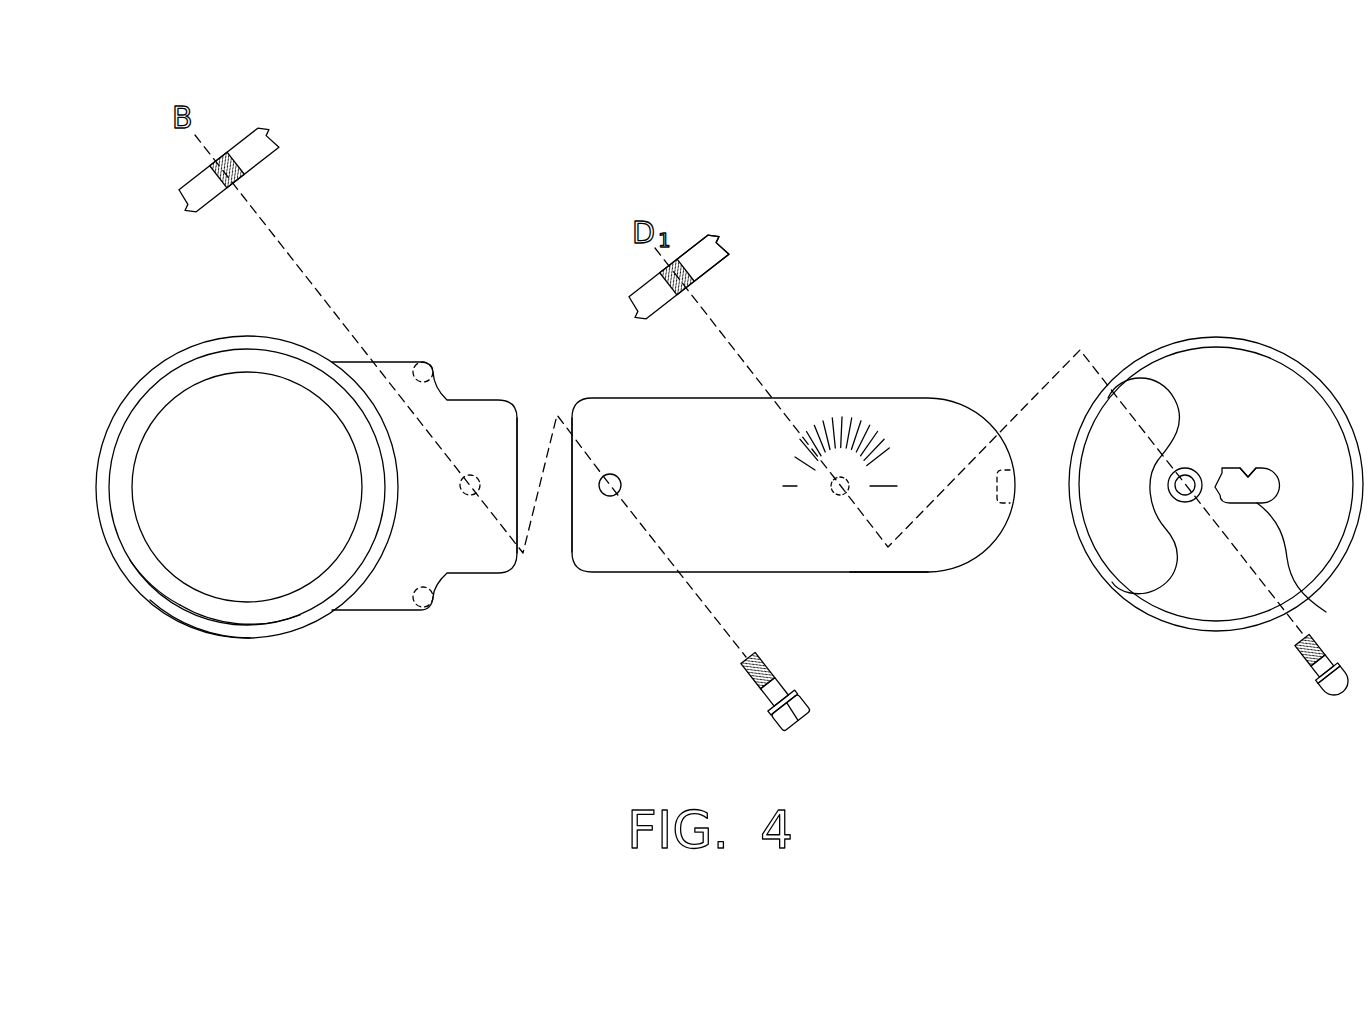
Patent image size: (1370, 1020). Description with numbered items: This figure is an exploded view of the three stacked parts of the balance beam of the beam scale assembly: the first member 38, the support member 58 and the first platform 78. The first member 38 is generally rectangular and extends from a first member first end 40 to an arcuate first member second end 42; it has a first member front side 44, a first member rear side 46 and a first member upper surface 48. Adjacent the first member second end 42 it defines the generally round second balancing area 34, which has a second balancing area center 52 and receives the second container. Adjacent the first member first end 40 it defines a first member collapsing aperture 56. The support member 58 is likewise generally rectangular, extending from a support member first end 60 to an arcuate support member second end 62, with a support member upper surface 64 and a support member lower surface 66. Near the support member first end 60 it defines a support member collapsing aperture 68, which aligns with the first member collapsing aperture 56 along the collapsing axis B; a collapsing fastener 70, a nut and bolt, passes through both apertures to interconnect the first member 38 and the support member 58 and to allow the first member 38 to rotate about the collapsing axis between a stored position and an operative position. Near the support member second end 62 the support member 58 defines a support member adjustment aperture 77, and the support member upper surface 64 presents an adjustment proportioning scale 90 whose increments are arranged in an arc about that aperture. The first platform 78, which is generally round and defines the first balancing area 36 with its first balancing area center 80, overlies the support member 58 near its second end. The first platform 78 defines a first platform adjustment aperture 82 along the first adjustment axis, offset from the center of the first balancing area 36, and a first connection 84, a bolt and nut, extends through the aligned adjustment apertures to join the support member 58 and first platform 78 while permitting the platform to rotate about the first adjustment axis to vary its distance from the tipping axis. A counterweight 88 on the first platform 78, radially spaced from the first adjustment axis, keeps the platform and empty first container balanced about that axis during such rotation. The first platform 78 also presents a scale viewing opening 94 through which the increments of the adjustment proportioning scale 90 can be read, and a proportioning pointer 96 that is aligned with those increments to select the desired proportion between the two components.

The second balancing area 34 is at (198, 623).
The first balancing area 36 is at (1176, 620).
The first member 38 is at (483, 398).
The first member first end 40 is at (516, 432).
The first member second end 42 is at (97, 500).
The first member front side 44 is at (248, 637).
The first member rear side 46 is at (251, 337).
The first member upper surface 48 is at (173, 603).
The second balancing area center 52 is at (247, 487).
The first member collapsing aperture 56 is at (470, 496).
The support member 58 is at (635, 572).
The support member first end 60 is at (570, 545).
The support member second end 62 is at (1016, 487).
The support member upper surface 64 is at (883, 572).
The support member lower surface 66 is at (698, 246).
The support member collapsing aperture 68 is at (610, 475).
The collapsing fastener 70 is at (237, 163).
The support member adjustment aperture 77 is at (835, 495).
The first platform 78 is at (1217, 633).
The first balancing area center 80 is at (1224, 467).
The first platform adjustment aperture 82 is at (1197, 470).
The first connection 84 is at (692, 268).
The counterweight 88 is at (1148, 410).
The adjustment proportioning scale 90 is at (843, 403).
The scale viewing opening 94 is at (1250, 473).
The proportioning pointer 96 is at (1312, 569).